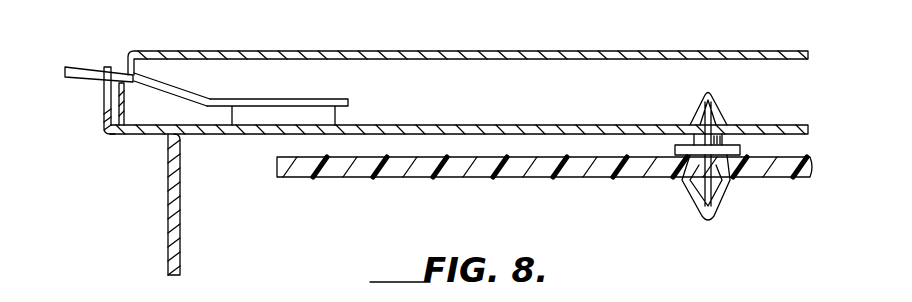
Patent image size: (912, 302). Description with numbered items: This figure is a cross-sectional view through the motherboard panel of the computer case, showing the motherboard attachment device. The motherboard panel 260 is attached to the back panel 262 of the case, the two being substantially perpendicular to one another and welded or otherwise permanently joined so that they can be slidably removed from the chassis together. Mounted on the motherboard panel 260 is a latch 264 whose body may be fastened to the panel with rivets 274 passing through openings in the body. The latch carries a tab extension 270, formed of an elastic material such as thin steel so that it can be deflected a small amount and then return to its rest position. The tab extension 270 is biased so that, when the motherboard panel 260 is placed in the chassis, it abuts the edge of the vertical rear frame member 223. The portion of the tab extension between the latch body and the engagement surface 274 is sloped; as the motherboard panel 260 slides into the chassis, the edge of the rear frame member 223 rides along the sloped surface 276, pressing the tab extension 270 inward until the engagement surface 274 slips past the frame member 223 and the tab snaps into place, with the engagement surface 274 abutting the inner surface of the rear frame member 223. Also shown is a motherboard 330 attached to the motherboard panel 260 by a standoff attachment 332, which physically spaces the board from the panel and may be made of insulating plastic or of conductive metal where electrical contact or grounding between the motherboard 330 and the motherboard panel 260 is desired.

The rear frame member 223 is at (115, 60).
The motherboard panel 260 is at (553, 123).
The back panel 262 is at (133, 145).
The latch 264 is at (248, 84).
The tab extension 270 is at (68, 66).
The engagement surface 274 is at (292, 97).
The sloped surface 276 is at (183, 86).
The motherboard 330 is at (332, 178).
The standoff attachment 332 is at (712, 213).